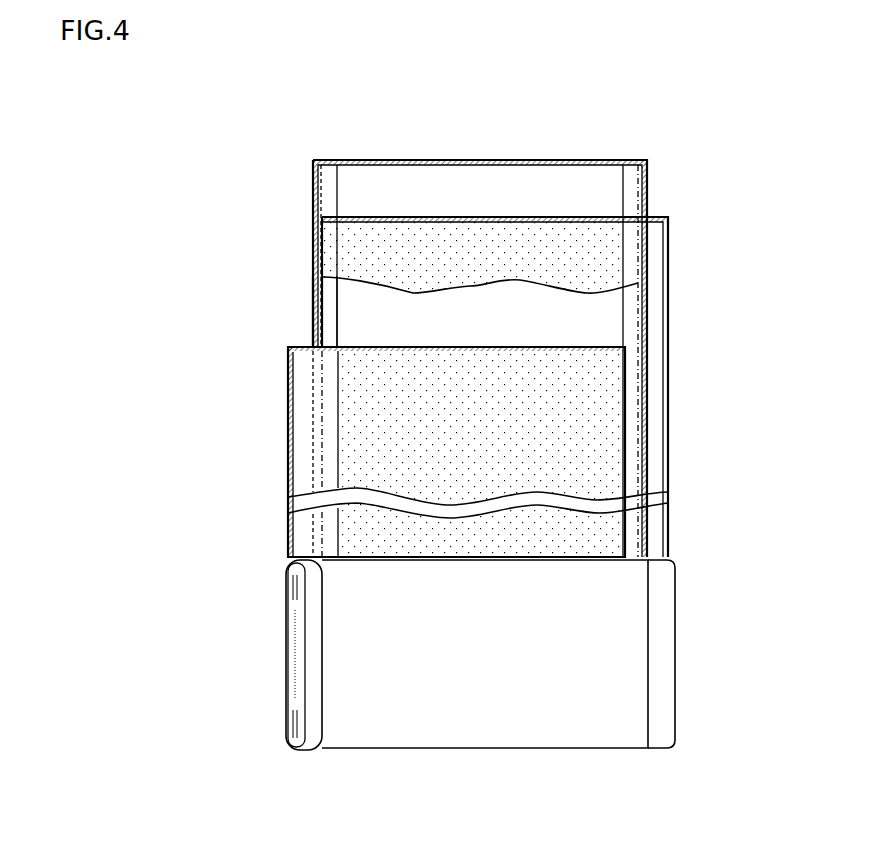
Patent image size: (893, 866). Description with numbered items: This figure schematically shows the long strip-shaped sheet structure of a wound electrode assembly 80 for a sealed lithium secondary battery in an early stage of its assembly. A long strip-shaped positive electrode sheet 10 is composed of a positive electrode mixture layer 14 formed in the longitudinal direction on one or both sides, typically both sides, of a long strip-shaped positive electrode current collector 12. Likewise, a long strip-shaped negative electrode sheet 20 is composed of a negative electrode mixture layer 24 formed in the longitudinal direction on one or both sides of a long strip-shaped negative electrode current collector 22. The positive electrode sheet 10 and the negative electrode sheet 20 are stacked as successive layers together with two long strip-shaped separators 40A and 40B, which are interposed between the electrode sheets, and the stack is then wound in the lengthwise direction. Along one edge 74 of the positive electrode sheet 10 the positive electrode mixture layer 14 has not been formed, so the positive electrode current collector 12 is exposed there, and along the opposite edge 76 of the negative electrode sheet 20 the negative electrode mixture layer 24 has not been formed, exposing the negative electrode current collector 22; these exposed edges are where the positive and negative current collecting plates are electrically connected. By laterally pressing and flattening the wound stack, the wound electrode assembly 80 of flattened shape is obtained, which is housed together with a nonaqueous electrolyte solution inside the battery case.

The positive electrode sheet 10 is at (288, 416).
The positive electrode current collector 12 is at (316, 496).
The positive electrode mixture layer 14 is at (352, 362).
The negative electrode sheet 20 is at (672, 290).
The negative electrode current collector 22 is at (672, 392).
The negative electrode mixture layer 24 is at (632, 238).
The separator 40A is at (336, 180).
The separator 40B is at (336, 314).
The edge of the positive electrode sheet 74 is at (302, 632).
The edge of the negative electrode sheet 76 is at (662, 628).
The wound electrode assembly 80 is at (541, 726).